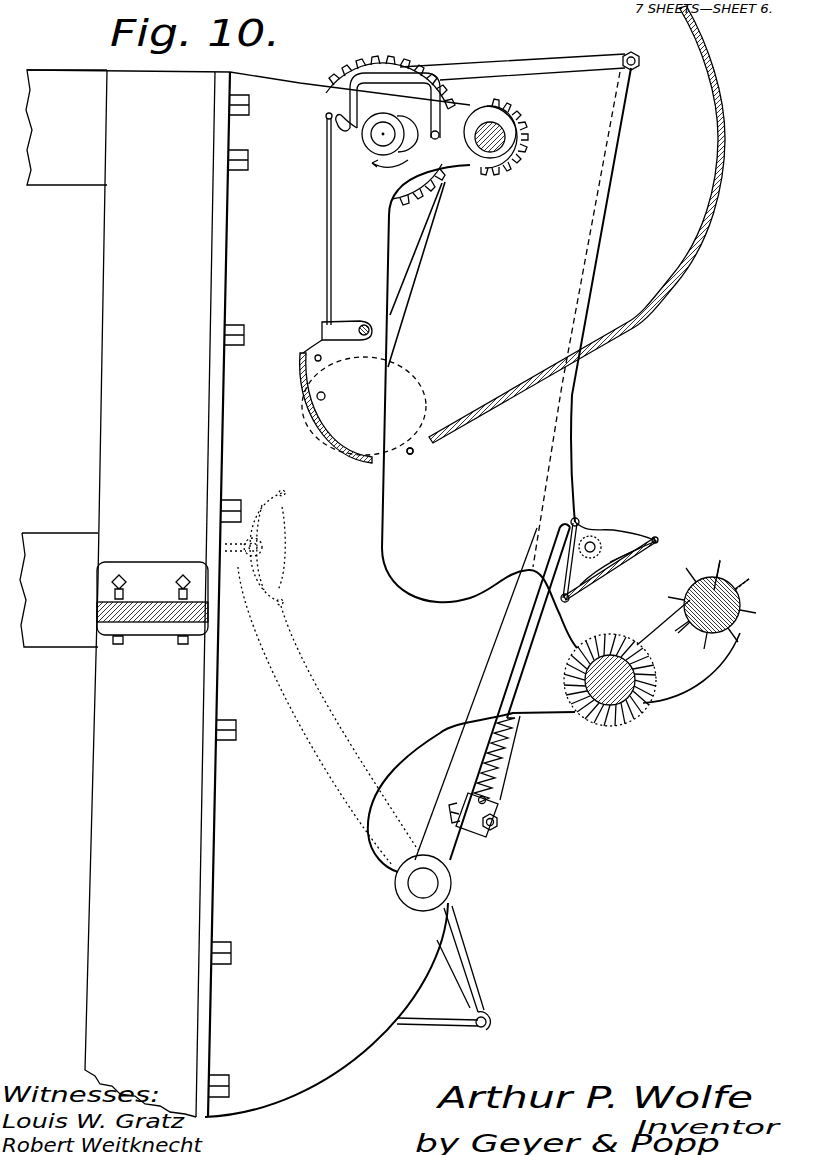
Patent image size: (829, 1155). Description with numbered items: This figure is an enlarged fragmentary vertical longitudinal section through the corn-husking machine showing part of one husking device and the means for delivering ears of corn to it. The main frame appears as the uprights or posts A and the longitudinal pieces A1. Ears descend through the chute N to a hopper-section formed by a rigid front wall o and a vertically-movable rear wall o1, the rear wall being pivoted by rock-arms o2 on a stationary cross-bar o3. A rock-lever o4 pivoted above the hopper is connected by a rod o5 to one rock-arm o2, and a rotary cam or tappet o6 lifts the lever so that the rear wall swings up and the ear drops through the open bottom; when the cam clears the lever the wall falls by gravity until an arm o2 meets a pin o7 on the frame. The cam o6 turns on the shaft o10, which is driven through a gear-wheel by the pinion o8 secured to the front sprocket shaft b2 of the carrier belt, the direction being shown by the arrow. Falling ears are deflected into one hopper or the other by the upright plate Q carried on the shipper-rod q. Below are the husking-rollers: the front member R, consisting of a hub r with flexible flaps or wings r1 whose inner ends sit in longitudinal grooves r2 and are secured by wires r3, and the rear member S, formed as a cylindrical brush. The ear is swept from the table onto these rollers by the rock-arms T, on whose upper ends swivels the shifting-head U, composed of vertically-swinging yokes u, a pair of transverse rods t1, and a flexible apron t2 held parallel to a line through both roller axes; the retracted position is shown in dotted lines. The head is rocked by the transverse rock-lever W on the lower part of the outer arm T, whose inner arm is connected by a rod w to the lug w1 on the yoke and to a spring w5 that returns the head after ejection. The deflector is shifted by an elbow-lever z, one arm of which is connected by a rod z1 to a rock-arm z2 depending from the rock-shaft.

The uprights or posts A is at (134, 593).
The longitudinal pieces A1 is at (66, 127).
The chute N is at (716, 176).
The rigid front wall o is at (415, 450).
The vertically-movable rear wall o1 is at (337, 448).
The rock-arms o2 is at (338, 323).
The stationary cross-bar o3 is at (366, 325).
The rock-lever o4 is at (349, 101).
The rod o5 is at (332, 235).
The rotary cam or tappet o6 is at (431, 138).
The pin o7 is at (322, 359).
The pinion o8 is at (512, 163).
The shaft o10 is at (380, 145).
The transverse shaft b2 is at (505, 137).
The shipper-rod q is at (325, 396).
The disk or upright plate Q is at (424, 383).
The shifting-head or sweep U is at (430, 677).
The vertically-swinging yokes u is at (615, 553).
The lug or arm w1 is at (578, 518).
The transverse rods t1 is at (655, 537).
The web or apron t2 is at (627, 562).
The rock-arms T is at (530, 644).
The rod w is at (500, 690).
The spring w5 is at (503, 772).
The transverse rock-lever W is at (480, 845).
The rear husking member S is at (630, 720).
The front husking member R is at (740, 625).
The hub r is at (740, 600).
The flexible flaps, beaters, or wings r1 is at (720, 562).
The longitudinal grooves r2 is at (696, 635).
The wires r3 is at (745, 580).
The elbow-lever z is at (423, 883).
The rod z1 is at (418, 1027).
The rock-arm z2 is at (458, 960).